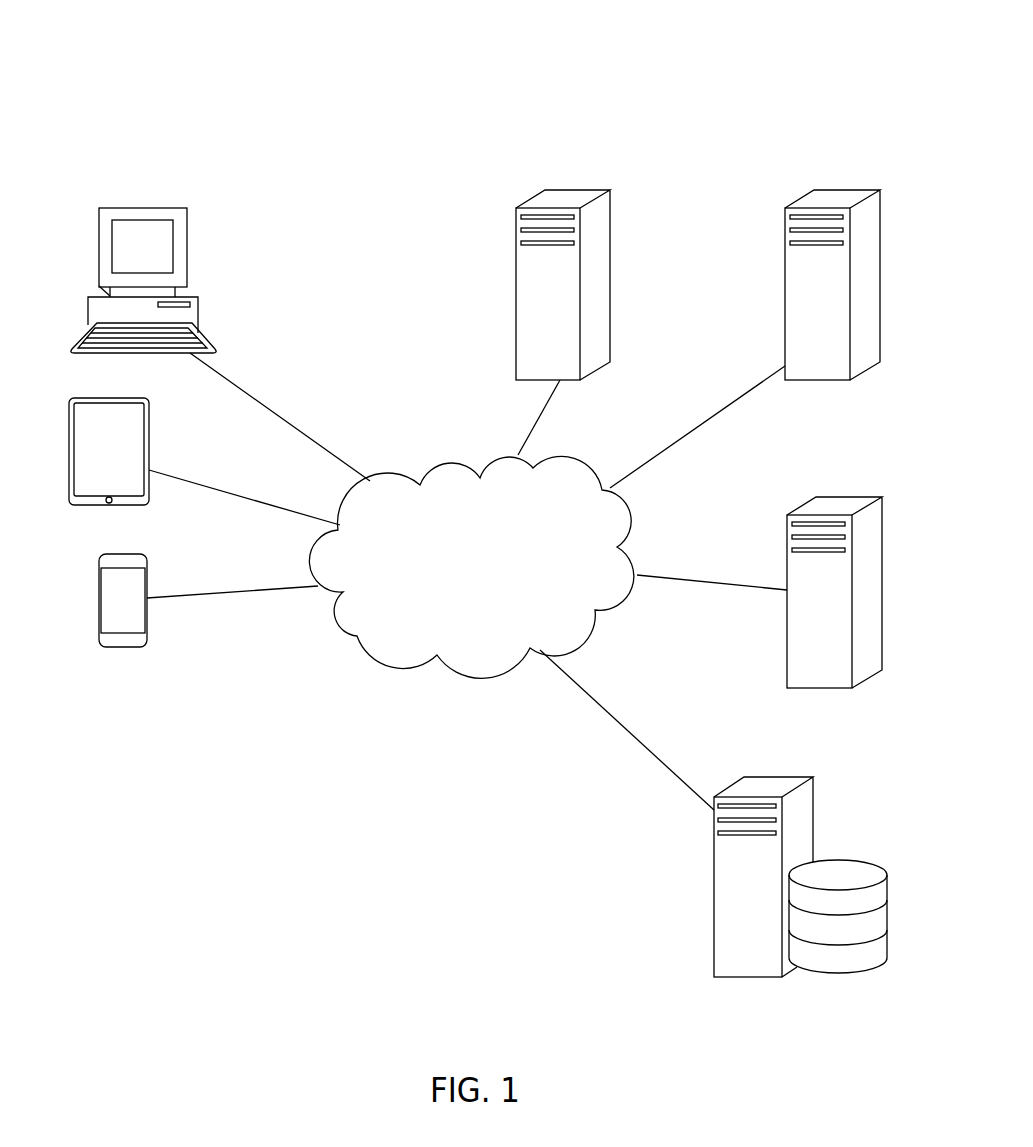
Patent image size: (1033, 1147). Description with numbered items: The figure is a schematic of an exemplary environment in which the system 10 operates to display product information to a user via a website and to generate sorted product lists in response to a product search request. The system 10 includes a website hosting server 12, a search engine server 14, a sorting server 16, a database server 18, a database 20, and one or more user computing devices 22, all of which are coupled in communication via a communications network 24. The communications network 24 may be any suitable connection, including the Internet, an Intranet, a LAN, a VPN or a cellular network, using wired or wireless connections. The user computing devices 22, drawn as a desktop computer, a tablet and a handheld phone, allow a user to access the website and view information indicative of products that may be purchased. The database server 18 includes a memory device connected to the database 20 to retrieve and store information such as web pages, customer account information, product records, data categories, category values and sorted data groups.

The system 10 is at (679, 42).
The website hosting server 12 is at (626, 179).
The search engine server 14 is at (893, 179).
The sorting server 16 is at (887, 482).
The database server 18 is at (834, 787).
The database 20 is at (894, 853).
The user computing devices 22 is at (104, 205).
The communications network 24 is at (471, 567).